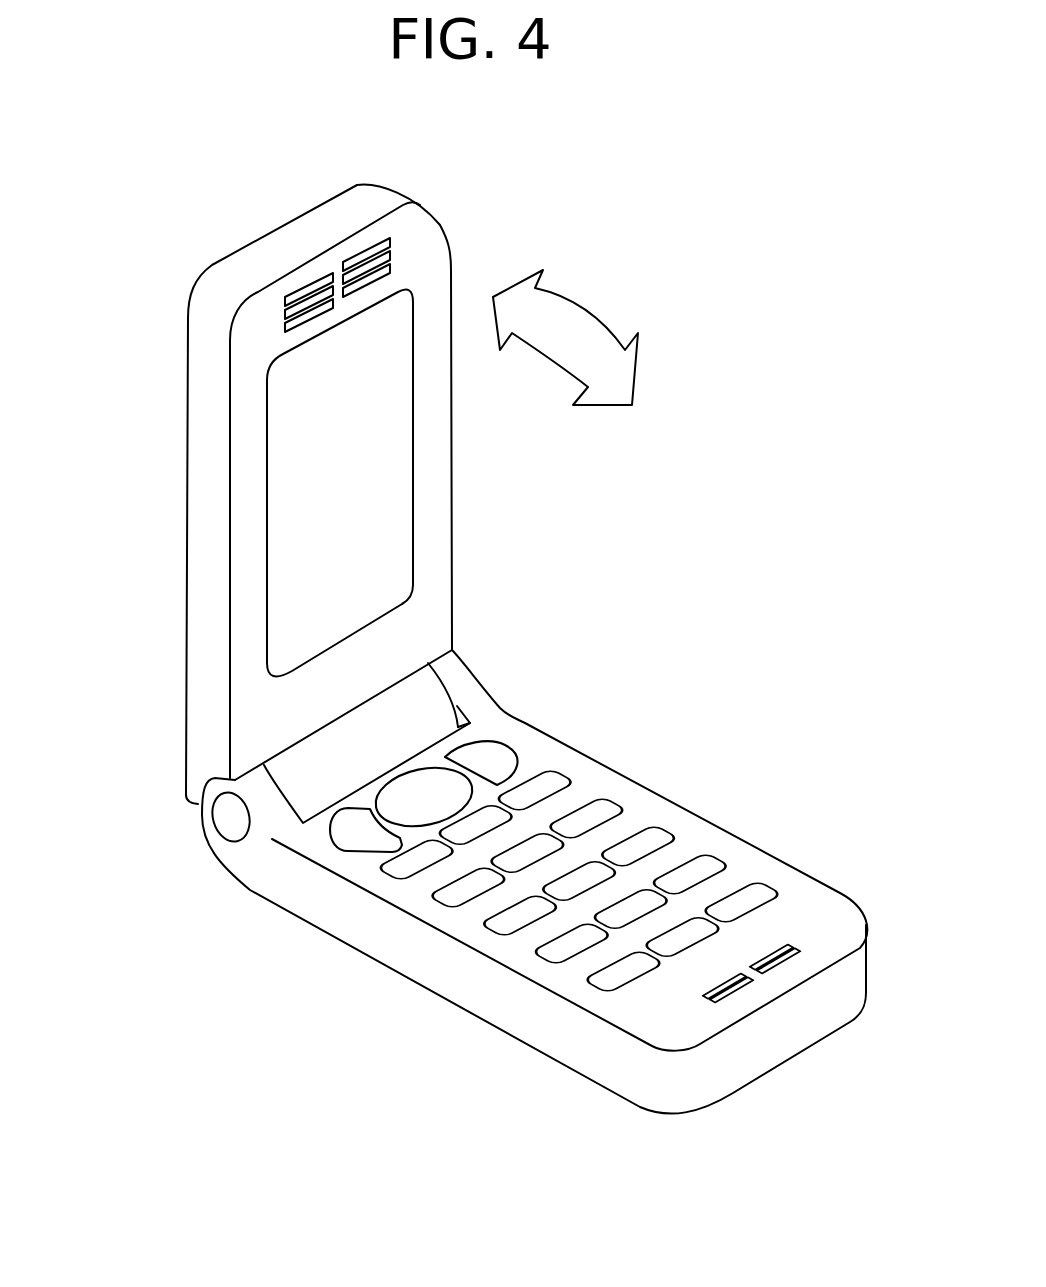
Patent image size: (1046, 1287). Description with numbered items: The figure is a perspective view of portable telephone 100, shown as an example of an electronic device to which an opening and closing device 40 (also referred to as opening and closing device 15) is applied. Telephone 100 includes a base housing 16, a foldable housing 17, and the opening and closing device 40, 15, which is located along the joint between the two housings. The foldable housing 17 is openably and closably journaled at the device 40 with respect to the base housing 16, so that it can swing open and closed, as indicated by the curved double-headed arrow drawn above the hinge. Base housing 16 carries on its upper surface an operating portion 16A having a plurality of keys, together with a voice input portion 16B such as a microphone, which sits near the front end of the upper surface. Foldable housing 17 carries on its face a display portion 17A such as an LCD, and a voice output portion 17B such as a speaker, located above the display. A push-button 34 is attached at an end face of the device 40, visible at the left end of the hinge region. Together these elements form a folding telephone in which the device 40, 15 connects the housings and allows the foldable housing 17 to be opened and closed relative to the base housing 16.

The portable telephone 100 is at (773, 492).
The foldable housing 17 is at (276, 252).
The display portion 17A is at (295, 505).
The voice output portion 17B is at (277, 322).
The opening and closing device 40 is at (425, 698).
The opening and closing device 15 is at (352, 736).
The base housing 16 is at (715, 1073).
The operating portion 16A is at (600, 807).
The voice input portion 16B is at (793, 947).
The push-button 34 is at (230, 818).